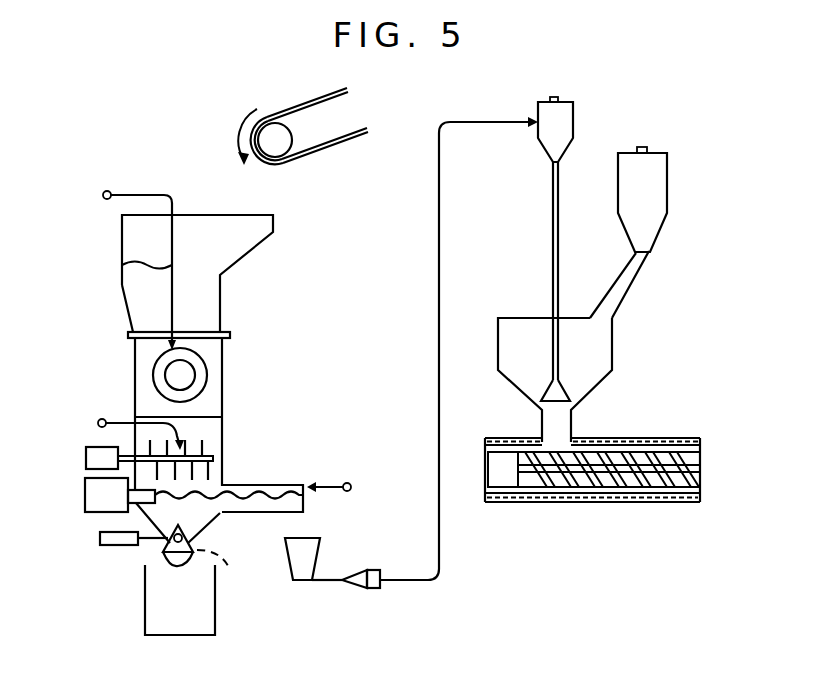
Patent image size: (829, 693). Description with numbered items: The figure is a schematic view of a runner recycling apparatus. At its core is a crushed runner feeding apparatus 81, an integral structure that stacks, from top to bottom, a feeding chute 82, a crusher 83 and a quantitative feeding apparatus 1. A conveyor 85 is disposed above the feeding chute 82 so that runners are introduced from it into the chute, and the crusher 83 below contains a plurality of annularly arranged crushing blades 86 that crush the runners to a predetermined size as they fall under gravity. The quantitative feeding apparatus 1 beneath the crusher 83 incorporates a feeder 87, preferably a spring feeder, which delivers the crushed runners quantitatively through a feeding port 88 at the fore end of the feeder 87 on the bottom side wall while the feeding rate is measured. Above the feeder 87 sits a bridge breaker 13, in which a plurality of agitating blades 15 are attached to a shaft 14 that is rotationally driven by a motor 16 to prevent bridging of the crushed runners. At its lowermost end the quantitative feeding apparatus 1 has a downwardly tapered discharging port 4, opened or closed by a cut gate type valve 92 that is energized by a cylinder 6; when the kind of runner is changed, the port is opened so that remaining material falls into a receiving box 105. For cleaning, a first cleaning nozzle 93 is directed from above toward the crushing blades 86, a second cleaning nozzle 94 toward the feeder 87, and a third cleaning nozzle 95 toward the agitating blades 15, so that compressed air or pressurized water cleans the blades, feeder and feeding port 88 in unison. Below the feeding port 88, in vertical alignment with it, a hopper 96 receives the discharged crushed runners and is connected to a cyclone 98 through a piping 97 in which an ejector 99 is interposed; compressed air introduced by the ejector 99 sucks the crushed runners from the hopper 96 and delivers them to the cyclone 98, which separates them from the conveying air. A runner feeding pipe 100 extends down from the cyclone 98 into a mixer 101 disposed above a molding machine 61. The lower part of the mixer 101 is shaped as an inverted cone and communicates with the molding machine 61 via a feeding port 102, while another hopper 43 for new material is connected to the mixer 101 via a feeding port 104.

The quantitative feeding apparatus 1 is at (229, 473).
The discharging port 4 is at (222, 568).
The cylinder 6 is at (108, 545).
The bridge breaker 13 is at (93, 446).
The shaft 14 is at (223, 457).
The agitating blades 15 is at (203, 445).
The motor 16 is at (93, 469).
The hopper for new material 43 is at (657, 192).
The molding machine 61 is at (660, 438).
The crushed runner feeding apparatus 81 is at (236, 311).
The feeding chute 82 is at (252, 215).
The crusher 83 is at (227, 388).
The conveyor 85 is at (290, 108).
The crushing blades 86 is at (203, 362).
The feeder 87 is at (205, 510).
The feeding port 88 is at (307, 500).
The cut gate type valve 92 is at (147, 553).
The first cleaning nozzle 93 is at (122, 265).
The second cleaning nozzle 94 is at (347, 483).
The third cleaning nozzle 95 is at (120, 418).
The hopper 96 is at (298, 560).
The piping 97 is at (440, 267).
The cyclone 98 is at (558, 132).
The ejector 99 is at (370, 588).
The runner feeding pipe 100 is at (553, 193).
The mixer 101 is at (619, 348).
The feeding port 102 is at (575, 420).
The feeding port 104 is at (630, 275).
The receiving box 105 is at (215, 620).